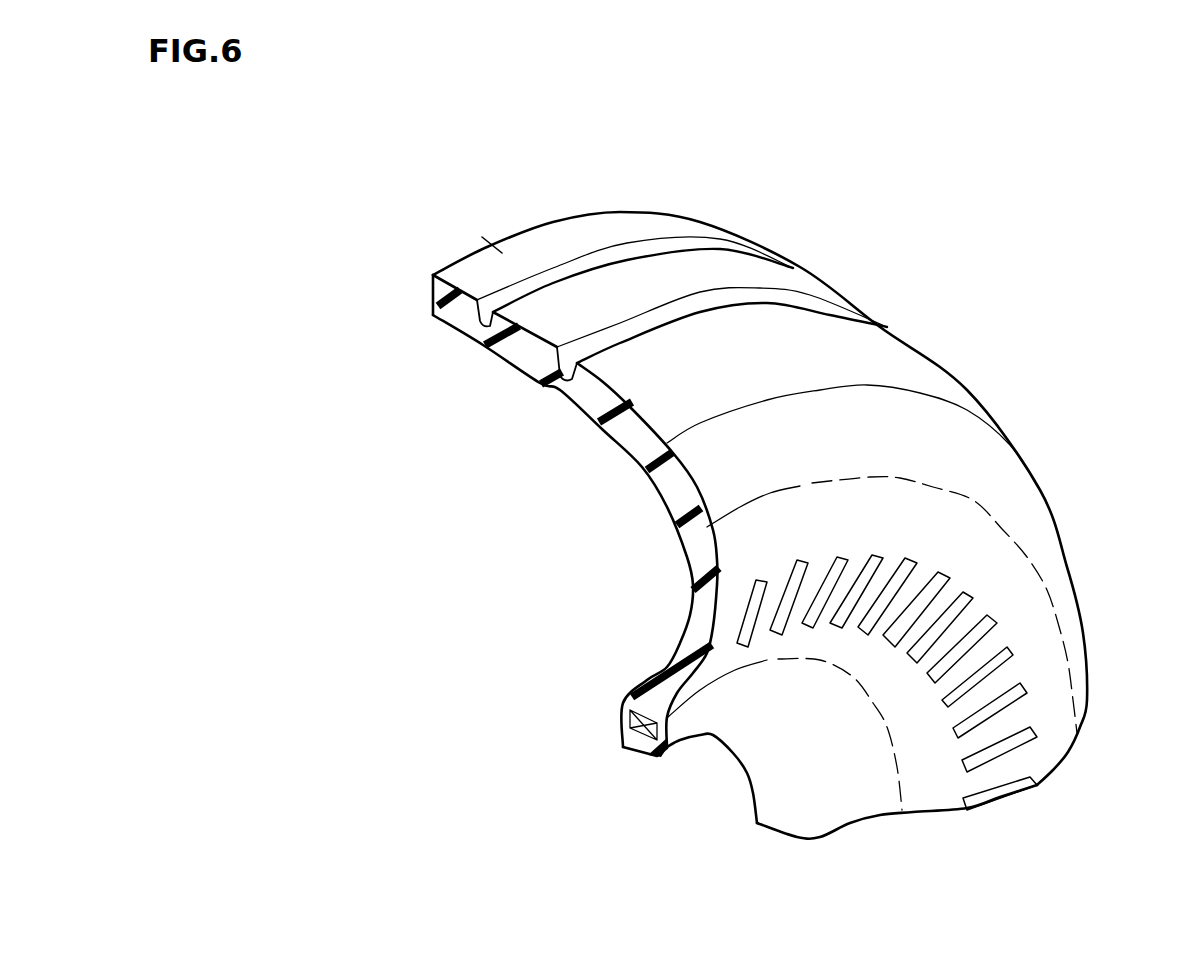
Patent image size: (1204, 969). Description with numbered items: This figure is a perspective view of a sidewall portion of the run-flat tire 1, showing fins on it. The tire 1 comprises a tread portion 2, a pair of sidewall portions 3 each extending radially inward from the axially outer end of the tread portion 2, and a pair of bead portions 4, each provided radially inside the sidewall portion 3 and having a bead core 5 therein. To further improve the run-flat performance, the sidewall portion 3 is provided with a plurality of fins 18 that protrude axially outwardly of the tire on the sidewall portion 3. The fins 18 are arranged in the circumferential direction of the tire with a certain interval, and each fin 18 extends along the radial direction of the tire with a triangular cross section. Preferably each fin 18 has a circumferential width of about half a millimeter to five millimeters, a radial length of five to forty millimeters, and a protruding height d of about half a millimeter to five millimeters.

The run-flat tire 1 is at (908, 220).
The tread portion 2 is at (604, 228).
The sidewall portion 3 is at (1035, 618).
The bead portion 4 is at (795, 783).
The bead core 5 is at (623, 717).
The fin 18 is at (1017, 752).
The protruding height d is at (810, 590).